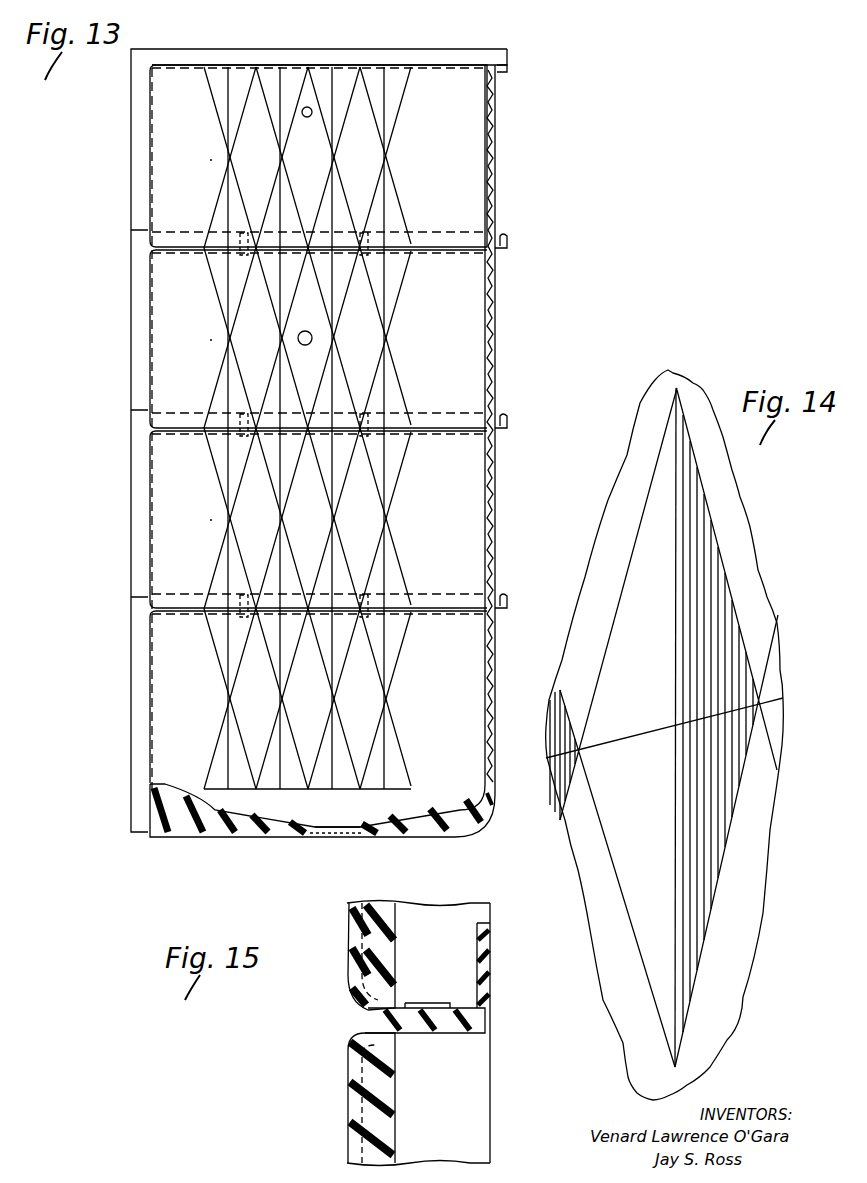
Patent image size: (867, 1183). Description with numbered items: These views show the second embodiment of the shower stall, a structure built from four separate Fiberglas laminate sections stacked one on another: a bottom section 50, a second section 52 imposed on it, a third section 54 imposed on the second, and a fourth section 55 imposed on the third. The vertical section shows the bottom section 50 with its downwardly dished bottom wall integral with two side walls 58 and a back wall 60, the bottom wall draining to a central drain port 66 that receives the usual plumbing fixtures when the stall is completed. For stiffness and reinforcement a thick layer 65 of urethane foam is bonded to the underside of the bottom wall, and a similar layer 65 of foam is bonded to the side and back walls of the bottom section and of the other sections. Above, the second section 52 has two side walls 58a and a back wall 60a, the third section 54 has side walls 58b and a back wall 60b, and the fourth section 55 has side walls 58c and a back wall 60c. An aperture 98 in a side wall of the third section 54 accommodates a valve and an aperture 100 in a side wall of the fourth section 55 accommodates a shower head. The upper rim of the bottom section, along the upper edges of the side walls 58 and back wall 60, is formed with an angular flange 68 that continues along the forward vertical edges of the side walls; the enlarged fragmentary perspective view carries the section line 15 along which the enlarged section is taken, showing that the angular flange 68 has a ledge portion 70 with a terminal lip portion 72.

In FIG. 13, the bottom section 50 is at (498, 668).
In FIG. 13, the second section 52 is at (497, 520).
In FIG. 13, the third section 54 is at (498, 330).
In FIG. 13, the fourth section 55 is at (500, 142).
In FIG. 13, the side walls 58 is at (367, 705).
In FIG. 13, the side walls 58a is at (367, 527).
In FIG. 13, the side walls 58b is at (371, 365).
In FIG. 13, the side walls 58c is at (371, 177).
In FIG. 13, the back wall 60 is at (485, 690).
In FIG. 13, the back wall 60a is at (485, 520).
In FIG. 13, the back wall 60b is at (487, 343).
In FIG. 13, the back wall 60c is at (487, 116).
In FIG. 13, the layer of urethane foam 65 is at (497, 191).
In FIG. 13, the central drain port 66 is at (338, 828).
In FIG. 13, the angular flange 68 is at (507, 66).
In FIG. 15, the angular flange 68 is at (478, 1035).
In FIG. 15, the ledge portion 70 is at (405, 1035).
In FIG. 15, the terminal lip portion 72 is at (488, 958).
In FIG. 13, the aperture 98 is at (312, 338).
In FIG. 13, the aperture 100 is at (312, 106).
In FIG. 14, the section line 15— 15 is at (703, 652).